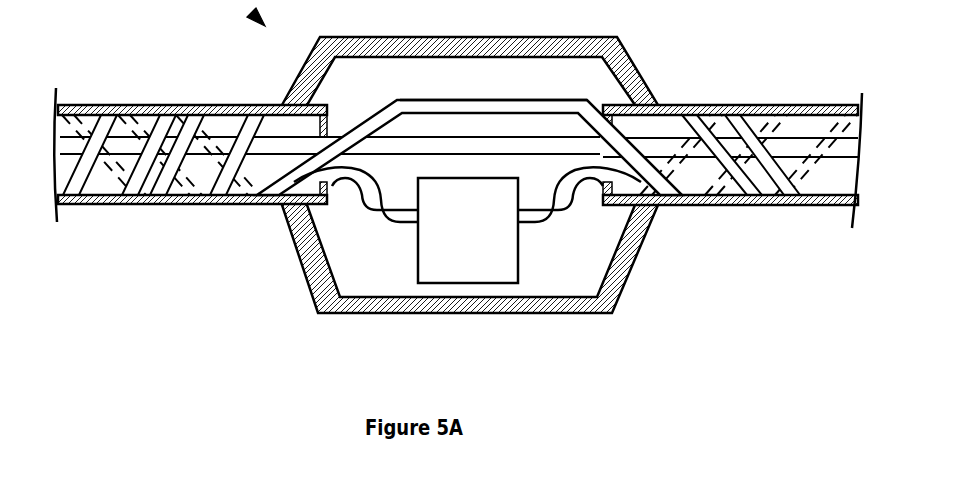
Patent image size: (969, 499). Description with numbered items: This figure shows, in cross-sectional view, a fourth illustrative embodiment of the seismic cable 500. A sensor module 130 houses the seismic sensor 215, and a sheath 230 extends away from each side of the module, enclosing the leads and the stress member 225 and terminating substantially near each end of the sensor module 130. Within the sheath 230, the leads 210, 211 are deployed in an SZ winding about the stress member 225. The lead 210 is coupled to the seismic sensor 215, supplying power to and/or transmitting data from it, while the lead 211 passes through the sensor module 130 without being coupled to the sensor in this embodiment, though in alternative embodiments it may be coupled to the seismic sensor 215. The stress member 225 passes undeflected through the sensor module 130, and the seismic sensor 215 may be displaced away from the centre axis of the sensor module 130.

The seismic cable 500 is at (256, 17).
The sensor module 130 is at (509, 37).
The lead 211 is at (500, 100).
The stress member 225 is at (433, 137).
The sheath 230 is at (158, 105).
The lead 210 is at (333, 207).
The seismic sensor 215 is at (488, 240).